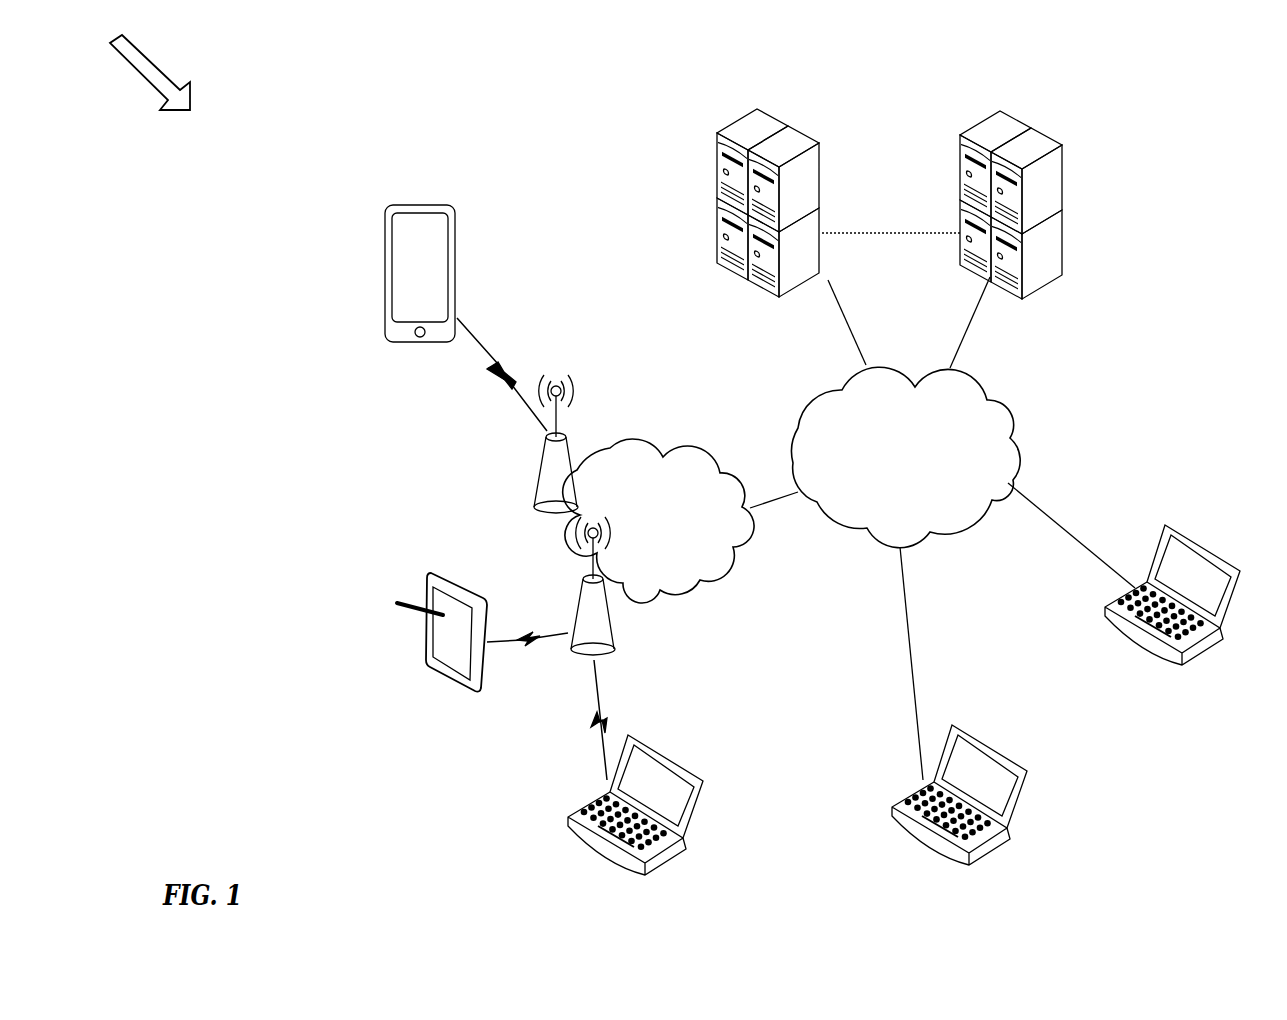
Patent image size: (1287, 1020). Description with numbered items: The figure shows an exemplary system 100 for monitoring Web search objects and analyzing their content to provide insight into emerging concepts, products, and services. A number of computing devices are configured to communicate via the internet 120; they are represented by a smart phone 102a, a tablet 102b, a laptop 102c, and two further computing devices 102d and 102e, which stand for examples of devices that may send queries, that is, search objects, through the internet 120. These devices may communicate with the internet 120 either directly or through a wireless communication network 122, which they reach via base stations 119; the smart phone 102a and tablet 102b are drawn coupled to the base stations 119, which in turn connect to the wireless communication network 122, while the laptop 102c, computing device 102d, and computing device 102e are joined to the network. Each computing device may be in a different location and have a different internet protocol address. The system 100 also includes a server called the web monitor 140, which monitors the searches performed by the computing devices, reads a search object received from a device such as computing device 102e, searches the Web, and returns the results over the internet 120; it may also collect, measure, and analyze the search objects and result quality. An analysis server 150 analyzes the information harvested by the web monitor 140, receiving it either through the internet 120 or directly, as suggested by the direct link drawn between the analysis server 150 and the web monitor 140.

The system 100 is at (139, 63).
The smart phone 102a is at (385, 252).
The tablet 102b is at (423, 650).
The laptop 102c is at (568, 822).
The computing device 102d is at (893, 822).
The computing device 102e is at (1153, 652).
The base station 119 is at (540, 460).
The internet 120 is at (1012, 417).
The wireless communication network 122 is at (658, 503).
The web monitor 140 is at (1062, 207).
The analysis server 150 is at (790, 130).